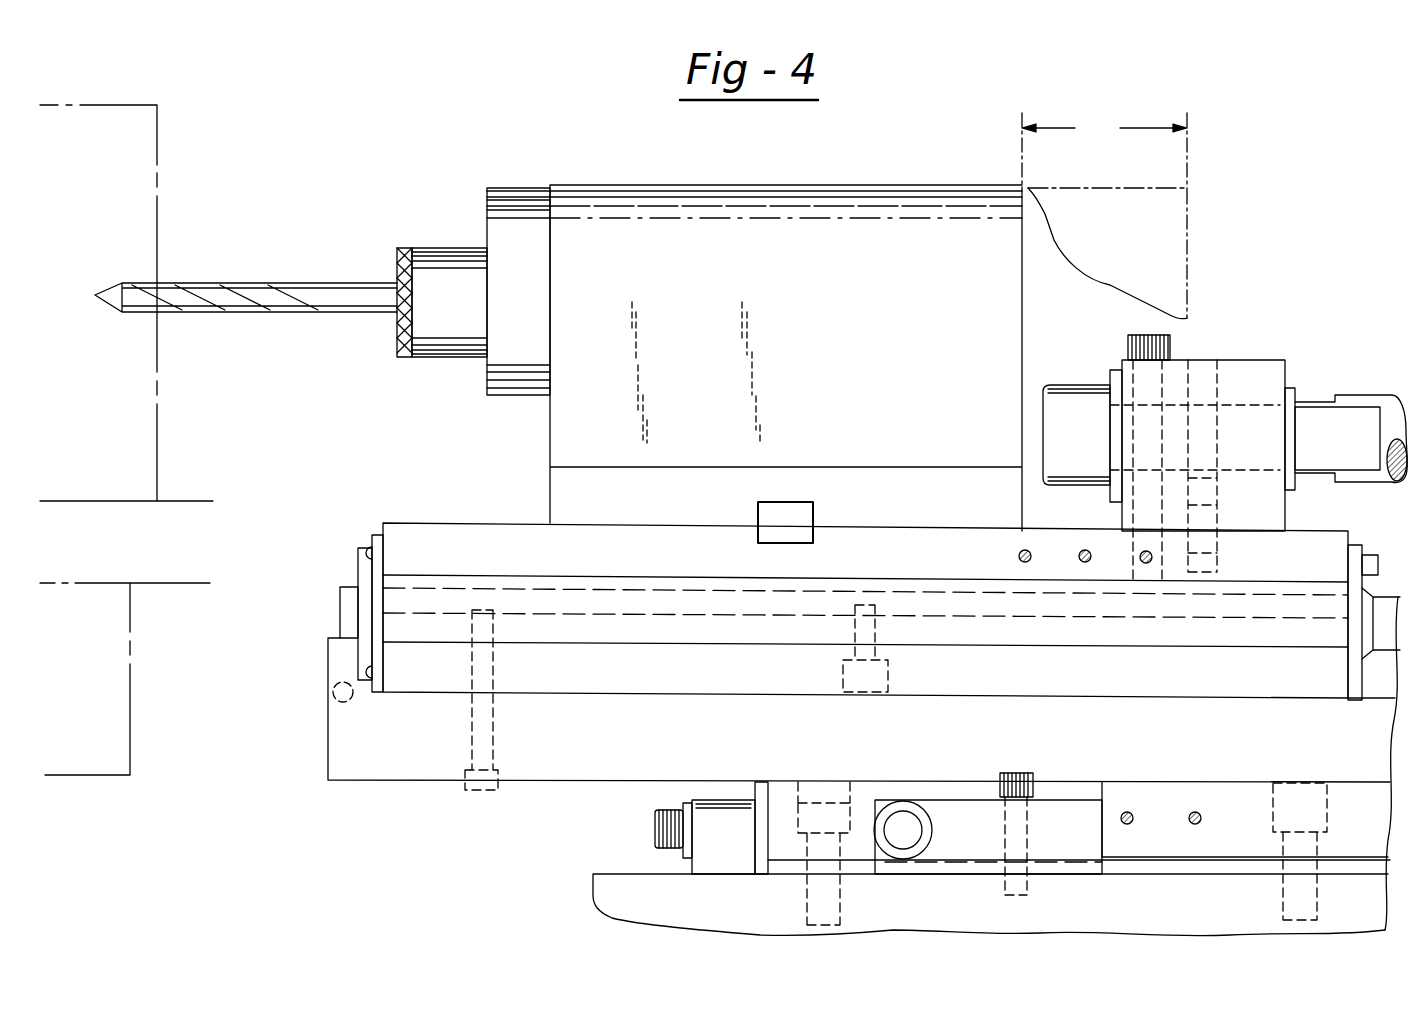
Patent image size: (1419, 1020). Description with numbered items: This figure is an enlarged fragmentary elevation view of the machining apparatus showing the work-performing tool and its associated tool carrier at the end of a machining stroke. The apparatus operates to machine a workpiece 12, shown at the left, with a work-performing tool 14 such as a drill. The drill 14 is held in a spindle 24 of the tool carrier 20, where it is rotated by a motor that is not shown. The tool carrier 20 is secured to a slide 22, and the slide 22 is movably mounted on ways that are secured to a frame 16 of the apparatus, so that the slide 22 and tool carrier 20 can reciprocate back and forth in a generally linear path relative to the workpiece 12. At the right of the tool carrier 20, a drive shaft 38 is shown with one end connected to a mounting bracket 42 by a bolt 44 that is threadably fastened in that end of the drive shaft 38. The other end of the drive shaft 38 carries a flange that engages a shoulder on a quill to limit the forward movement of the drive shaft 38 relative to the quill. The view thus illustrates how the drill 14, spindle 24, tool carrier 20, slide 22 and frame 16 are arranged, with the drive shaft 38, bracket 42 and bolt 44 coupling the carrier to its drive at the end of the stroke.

The workpiece 12 is at (147, 157).
The work-performing tool 14 is at (215, 290).
The frame 16 is at (602, 882).
The tool carrier 20 is at (857, 150).
The slide 22 is at (512, 490).
The spindle 24 is at (435, 258).
The drive shaft 38 is at (1370, 490).
The mounting bracket 42 is at (1242, 368).
The bolt 44 is at (1058, 418).